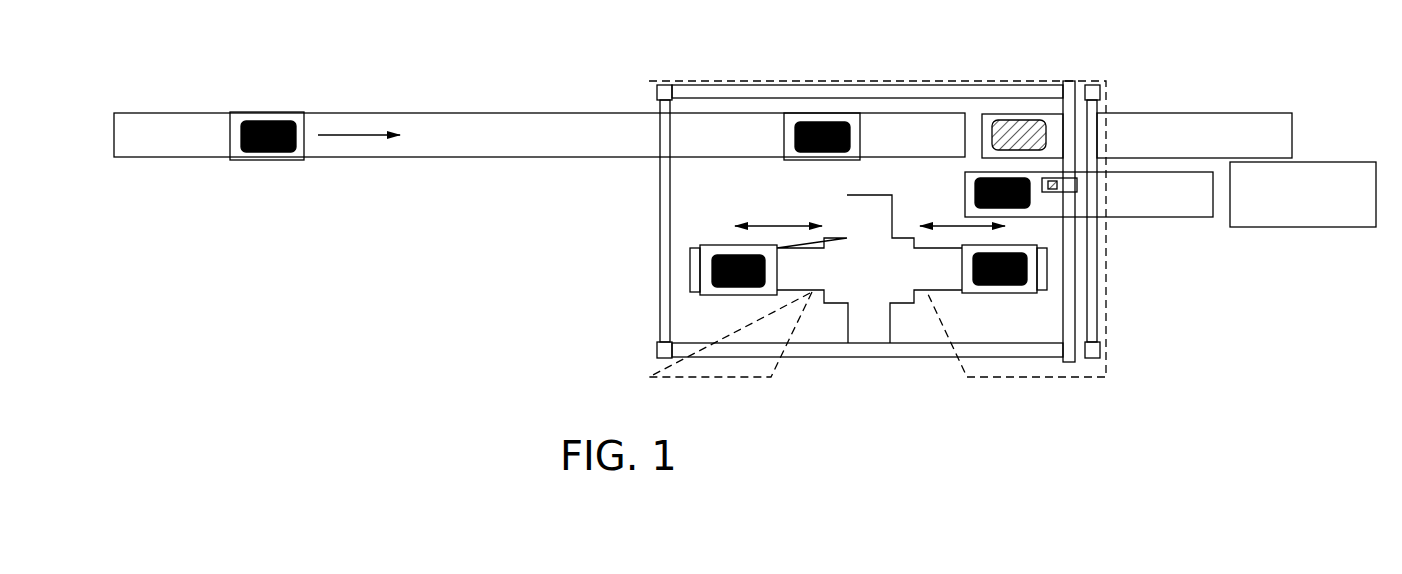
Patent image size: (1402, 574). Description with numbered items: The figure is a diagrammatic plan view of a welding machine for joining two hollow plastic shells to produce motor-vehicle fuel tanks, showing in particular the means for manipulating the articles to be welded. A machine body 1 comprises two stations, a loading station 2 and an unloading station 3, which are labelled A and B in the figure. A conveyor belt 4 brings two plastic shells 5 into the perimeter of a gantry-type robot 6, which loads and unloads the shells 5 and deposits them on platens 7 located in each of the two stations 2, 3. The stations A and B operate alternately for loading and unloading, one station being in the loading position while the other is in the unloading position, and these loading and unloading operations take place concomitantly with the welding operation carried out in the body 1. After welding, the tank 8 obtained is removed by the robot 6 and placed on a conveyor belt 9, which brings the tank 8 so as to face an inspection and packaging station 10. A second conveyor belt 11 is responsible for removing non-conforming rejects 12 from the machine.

The machine body 1 is at (858, 290).
The loading station 2 is at (700, 278).
The unloading station 3 is at (1007, 280).
The conveyor belt 4 is at (440, 116).
The plastic shells 5 is at (262, 122).
The gantry-type robot 6 is at (1070, 186).
The platens 7 is at (697, 263).
The tank 8 is at (975, 192).
The conveyor belt 9 is at (1047, 207).
The inspection and packaging station 10 is at (1308, 218).
The second conveyor belt 11 is at (1150, 120).
The non-conforming rejects 12 is at (1017, 130).